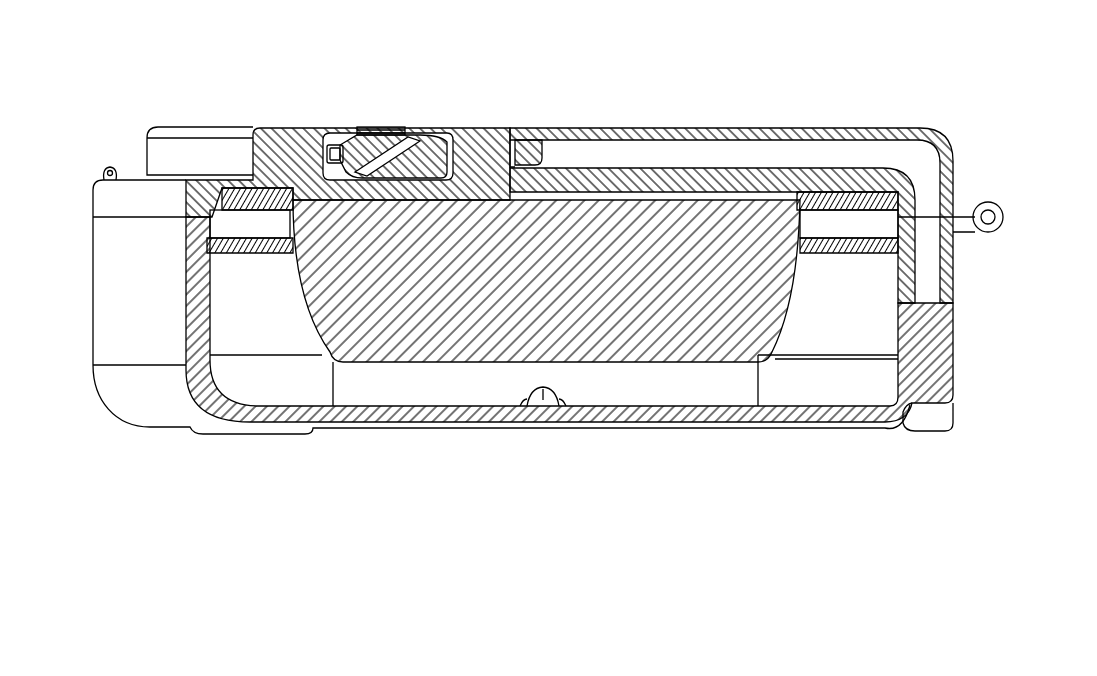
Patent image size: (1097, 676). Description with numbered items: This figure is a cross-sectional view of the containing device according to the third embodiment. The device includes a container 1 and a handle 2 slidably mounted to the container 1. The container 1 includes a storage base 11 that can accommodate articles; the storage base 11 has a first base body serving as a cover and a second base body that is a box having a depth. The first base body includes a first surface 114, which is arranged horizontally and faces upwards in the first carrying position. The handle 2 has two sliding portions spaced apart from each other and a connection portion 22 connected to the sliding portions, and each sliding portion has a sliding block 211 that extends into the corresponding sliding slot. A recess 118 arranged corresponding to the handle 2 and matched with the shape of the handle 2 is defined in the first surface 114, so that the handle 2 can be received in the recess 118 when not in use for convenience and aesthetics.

The container 1 is at (966, 330).
The storage base 11 is at (723, 420).
The first surface 114 is at (700, 127).
The recess 118 is at (330, 142).
The handle 2 is at (382, 126).
The connection portion 22 is at (400, 130).
The sliding block 211 is at (530, 130).